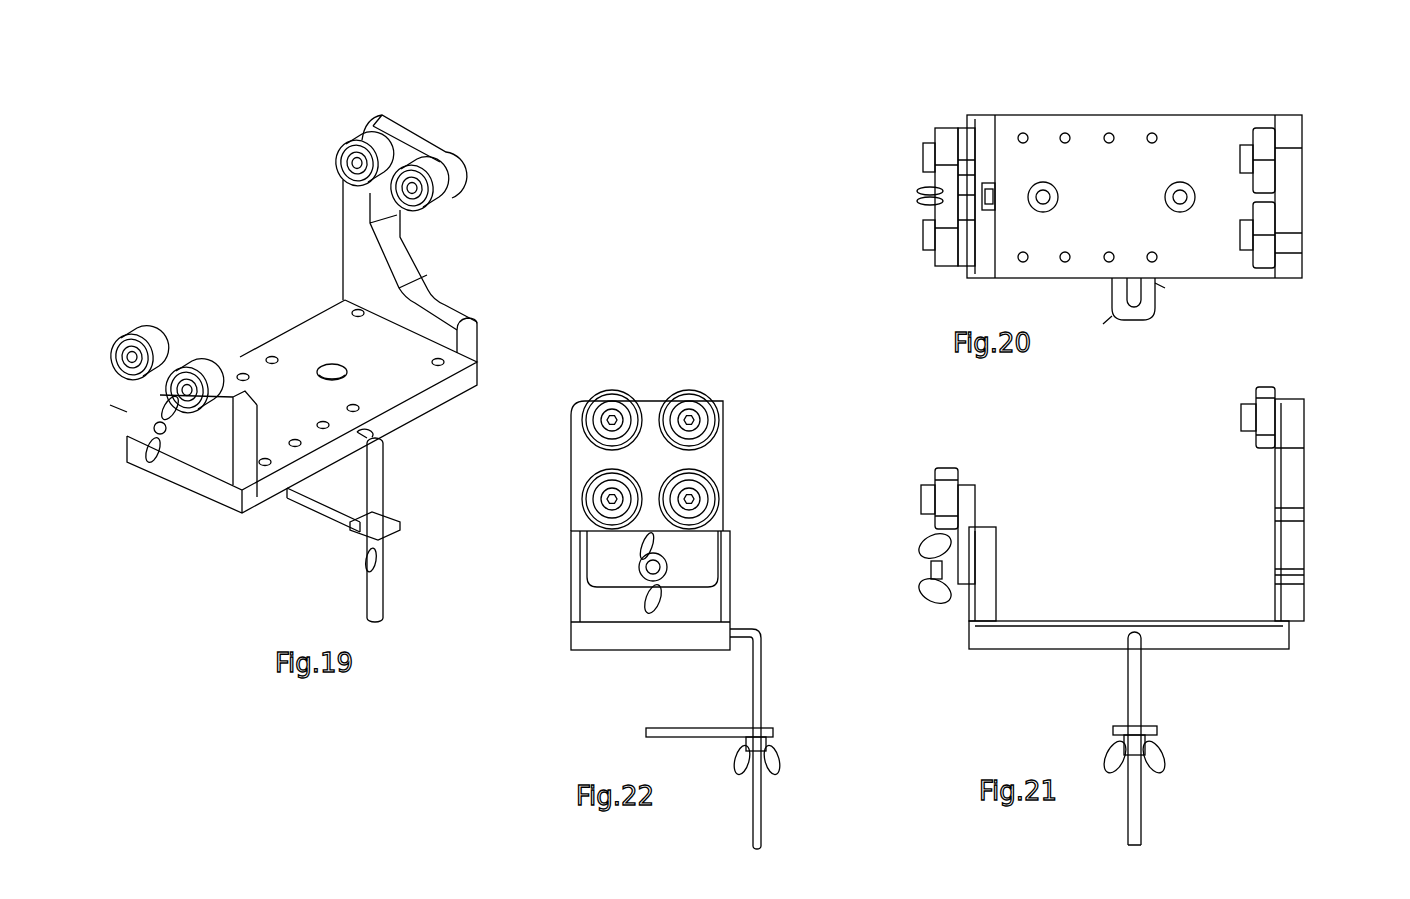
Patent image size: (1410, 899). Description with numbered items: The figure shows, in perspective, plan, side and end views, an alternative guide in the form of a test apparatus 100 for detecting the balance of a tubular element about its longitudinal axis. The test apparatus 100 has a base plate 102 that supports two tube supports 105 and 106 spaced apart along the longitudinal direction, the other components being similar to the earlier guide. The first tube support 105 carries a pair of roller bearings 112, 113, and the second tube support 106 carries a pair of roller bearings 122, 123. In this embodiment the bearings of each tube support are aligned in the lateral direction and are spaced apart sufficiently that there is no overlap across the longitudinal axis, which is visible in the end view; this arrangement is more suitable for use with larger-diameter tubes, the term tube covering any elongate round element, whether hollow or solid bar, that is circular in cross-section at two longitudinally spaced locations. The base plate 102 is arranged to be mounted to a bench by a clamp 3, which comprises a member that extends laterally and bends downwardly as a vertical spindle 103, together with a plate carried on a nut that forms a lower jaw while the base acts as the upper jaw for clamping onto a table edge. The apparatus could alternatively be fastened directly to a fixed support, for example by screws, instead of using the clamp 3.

In FIG. 19, the test apparatus 100 is at (167, 172).
In FIG. 20, the test apparatus 100 is at (900, 118).
In FIG. 21, the test apparatus 100 is at (1120, 466).
In FIG. 22, the test apparatus 100 is at (671, 327).
In FIG. 19, the base plate 102 is at (302, 406).
In FIG. 20, the base plate 102 is at (1134, 196).
In FIG. 21, the base plate 102 is at (1189, 653).
In FIG. 22, the base plate 102 is at (650, 525).
In FIG. 19, the clamp rod 103 is at (343, 525).
In FIG. 20, the clamp rod 103 is at (1134, 301).
In FIG. 21, the clamp rod 103 is at (1158, 802).
In FIG. 22, the clamp rod 103 is at (714, 739).
In FIG. 19, the tube support 105 is at (125, 380).
In FIG. 20, the tube support 105 is at (900, 196).
In FIG. 21, the tube support 105 is at (948, 456).
In FIG. 19, the tube support 106 is at (465, 152).
In FIG. 20, the tube support 106 is at (1245, 134).
In FIG. 21, the tube support 106 is at (1312, 425).
In FIG. 19, the roller bearing 112 is at (190, 350).
In FIG. 22, the roller bearing 112 is at (706, 470).
In FIG. 19, the roller bearing 113 is at (133, 333).
In FIG. 22, the roller bearing 113 is at (583, 490).
In FIG. 19, the roller bearing 122 is at (447, 218).
In FIG. 22, the roller bearing 122 is at (690, 389).
In FIG. 19, the roller bearing 123 is at (350, 140).
In FIG. 22, the roller bearing 123 is at (612, 388).
In FIG. 19, the clamp 3 is at (352, 568).
In FIG. 22, the clamp 3 is at (791, 757).